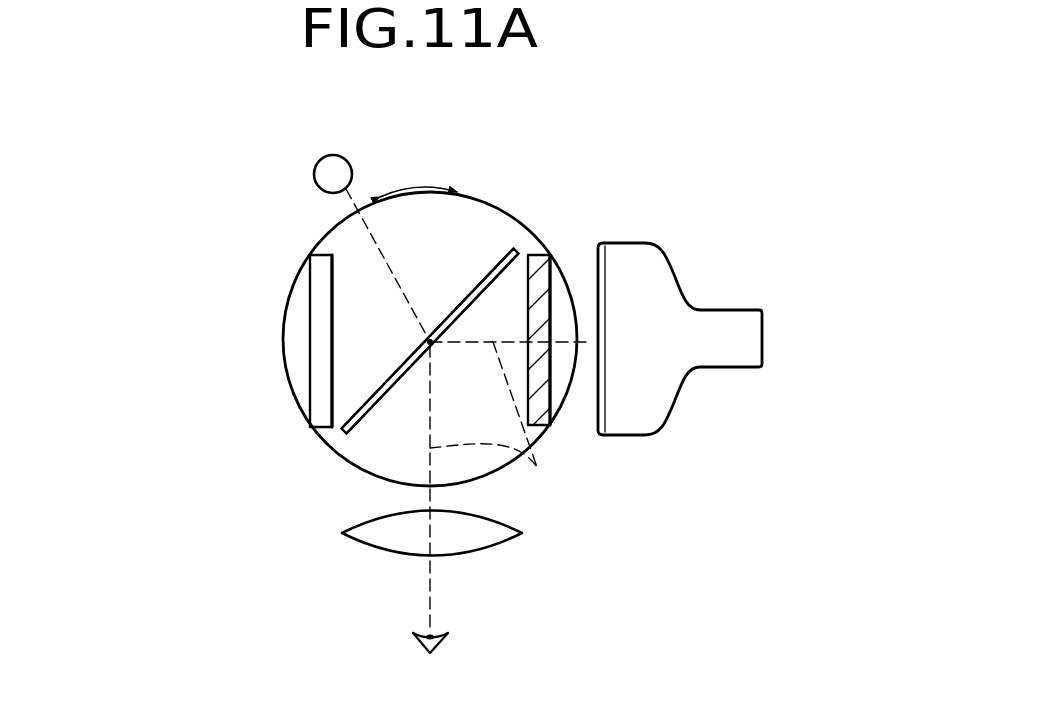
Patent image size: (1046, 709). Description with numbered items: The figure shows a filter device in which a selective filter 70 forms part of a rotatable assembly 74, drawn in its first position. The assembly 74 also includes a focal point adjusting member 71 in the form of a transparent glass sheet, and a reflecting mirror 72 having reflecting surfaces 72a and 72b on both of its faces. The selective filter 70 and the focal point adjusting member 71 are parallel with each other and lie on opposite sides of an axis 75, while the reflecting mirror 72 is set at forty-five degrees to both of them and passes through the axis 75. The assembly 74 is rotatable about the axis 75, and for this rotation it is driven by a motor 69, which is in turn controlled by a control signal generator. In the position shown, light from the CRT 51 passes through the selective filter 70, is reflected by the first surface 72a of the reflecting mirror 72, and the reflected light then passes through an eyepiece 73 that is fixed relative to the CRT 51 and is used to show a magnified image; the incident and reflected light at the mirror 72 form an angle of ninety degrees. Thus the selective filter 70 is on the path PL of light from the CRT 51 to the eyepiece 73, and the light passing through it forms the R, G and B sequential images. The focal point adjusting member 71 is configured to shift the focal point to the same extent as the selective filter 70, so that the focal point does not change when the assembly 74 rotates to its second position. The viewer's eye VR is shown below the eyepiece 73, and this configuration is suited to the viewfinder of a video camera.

The CRT 51 is at (697, 308).
The motor 69 is at (313, 172).
The selective filter 70 is at (548, 268).
The focal point adjusting member 71 is at (312, 390).
The reflecting mirror 72 is at (458, 305).
The first surface 72a is at (371, 405).
The reflecting surface 72b is at (382, 380).
The eyepiece 73 is at (367, 522).
The assembly 74 is at (258, 308).
The axis 75 is at (433, 346).
The path of light PL is at (508, 416).
The viewer's eye VR is at (442, 653).